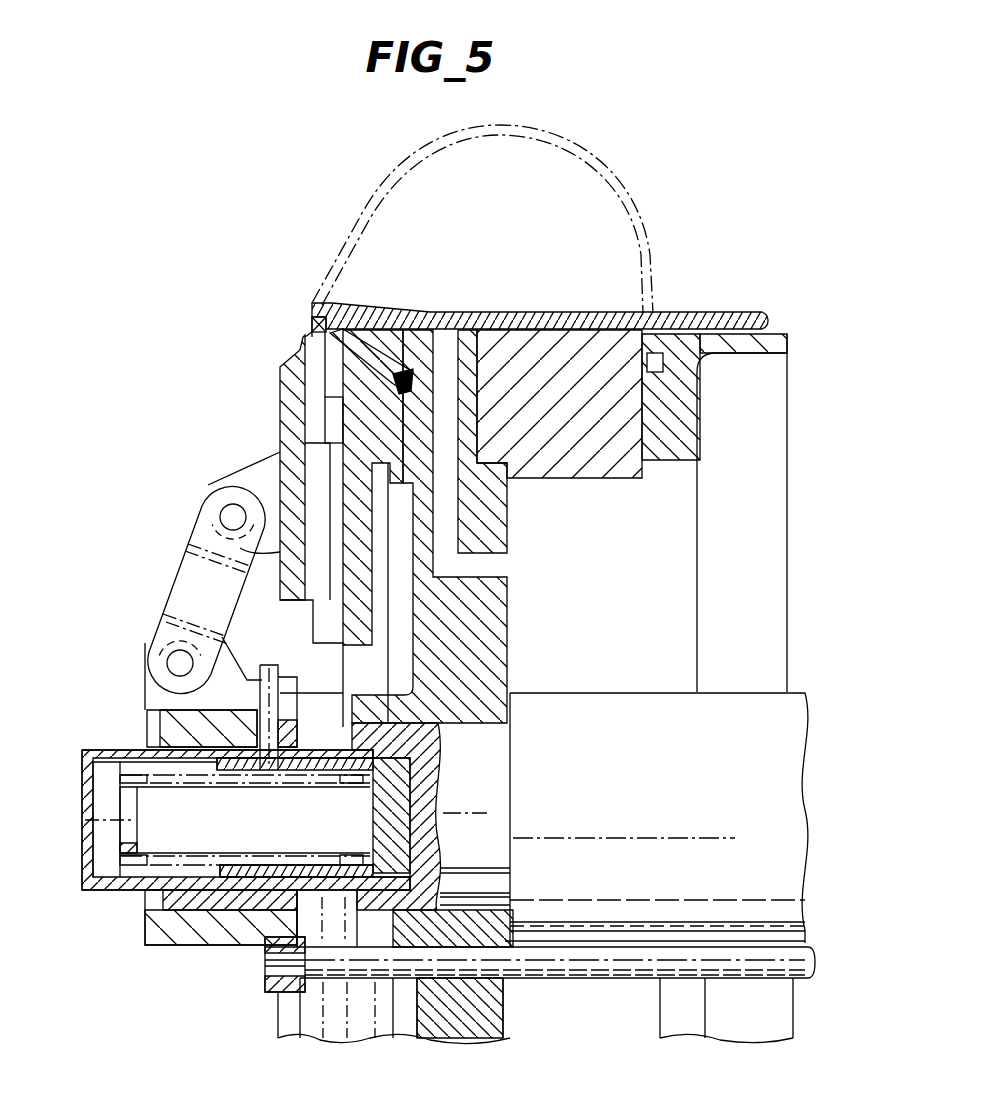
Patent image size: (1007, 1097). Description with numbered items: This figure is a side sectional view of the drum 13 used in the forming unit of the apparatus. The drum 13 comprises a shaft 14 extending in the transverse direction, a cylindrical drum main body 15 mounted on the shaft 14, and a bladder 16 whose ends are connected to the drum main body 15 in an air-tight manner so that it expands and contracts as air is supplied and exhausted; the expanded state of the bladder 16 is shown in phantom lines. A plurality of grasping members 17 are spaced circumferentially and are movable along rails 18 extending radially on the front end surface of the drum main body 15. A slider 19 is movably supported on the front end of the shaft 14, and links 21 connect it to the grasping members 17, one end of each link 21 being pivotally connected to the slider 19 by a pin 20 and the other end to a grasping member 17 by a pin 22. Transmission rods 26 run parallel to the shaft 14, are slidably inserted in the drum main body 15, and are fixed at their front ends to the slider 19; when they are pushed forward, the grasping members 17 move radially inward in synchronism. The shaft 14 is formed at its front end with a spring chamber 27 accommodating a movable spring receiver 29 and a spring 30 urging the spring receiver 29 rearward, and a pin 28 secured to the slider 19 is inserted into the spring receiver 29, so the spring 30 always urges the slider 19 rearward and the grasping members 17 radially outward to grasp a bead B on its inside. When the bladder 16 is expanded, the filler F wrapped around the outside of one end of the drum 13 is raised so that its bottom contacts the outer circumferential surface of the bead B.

The drum 13 is at (735, 292).
The shaft 14 is at (725, 700).
The drum main body 15 is at (558, 483).
The bladder 16 is at (596, 151).
The grasping members 17 is at (290, 380).
The rails 18 is at (318, 440).
The slider 19 is at (150, 718).
The pin 20 is at (168, 665).
The links 21 is at (185, 580).
The pin 22 is at (228, 512).
The transmission rods 26 is at (800, 985).
The spring chamber 27 is at (270, 831).
The pin 28 is at (262, 665).
The spring receiver 29 is at (370, 810).
The spring 30 is at (150, 784).
The bead B is at (312, 325).
The filler F is at (365, 302).